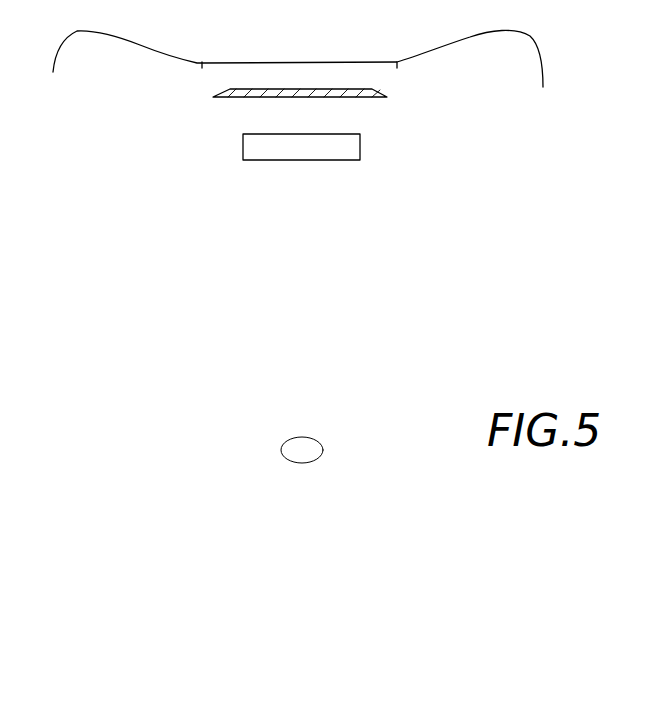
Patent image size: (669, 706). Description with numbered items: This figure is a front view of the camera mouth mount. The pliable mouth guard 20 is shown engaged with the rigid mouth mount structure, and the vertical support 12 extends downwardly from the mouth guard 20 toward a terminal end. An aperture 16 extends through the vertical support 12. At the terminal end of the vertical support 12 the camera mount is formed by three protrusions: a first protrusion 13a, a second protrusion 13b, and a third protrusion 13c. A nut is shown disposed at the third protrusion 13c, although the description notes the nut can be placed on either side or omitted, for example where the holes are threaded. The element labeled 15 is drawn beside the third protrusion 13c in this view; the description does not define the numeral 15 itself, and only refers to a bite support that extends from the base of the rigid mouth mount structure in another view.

The pliable mouth guard 20 is at (582, 98).
The vertical support 12 is at (370, 388).
The aperture 16 is at (297, 450).
The locking button 15 is at (393, 545).
The first protrusion 13a is at (245, 597).
The second protrusion 13b is at (302, 597).
The third protrusion 13c is at (357, 597).